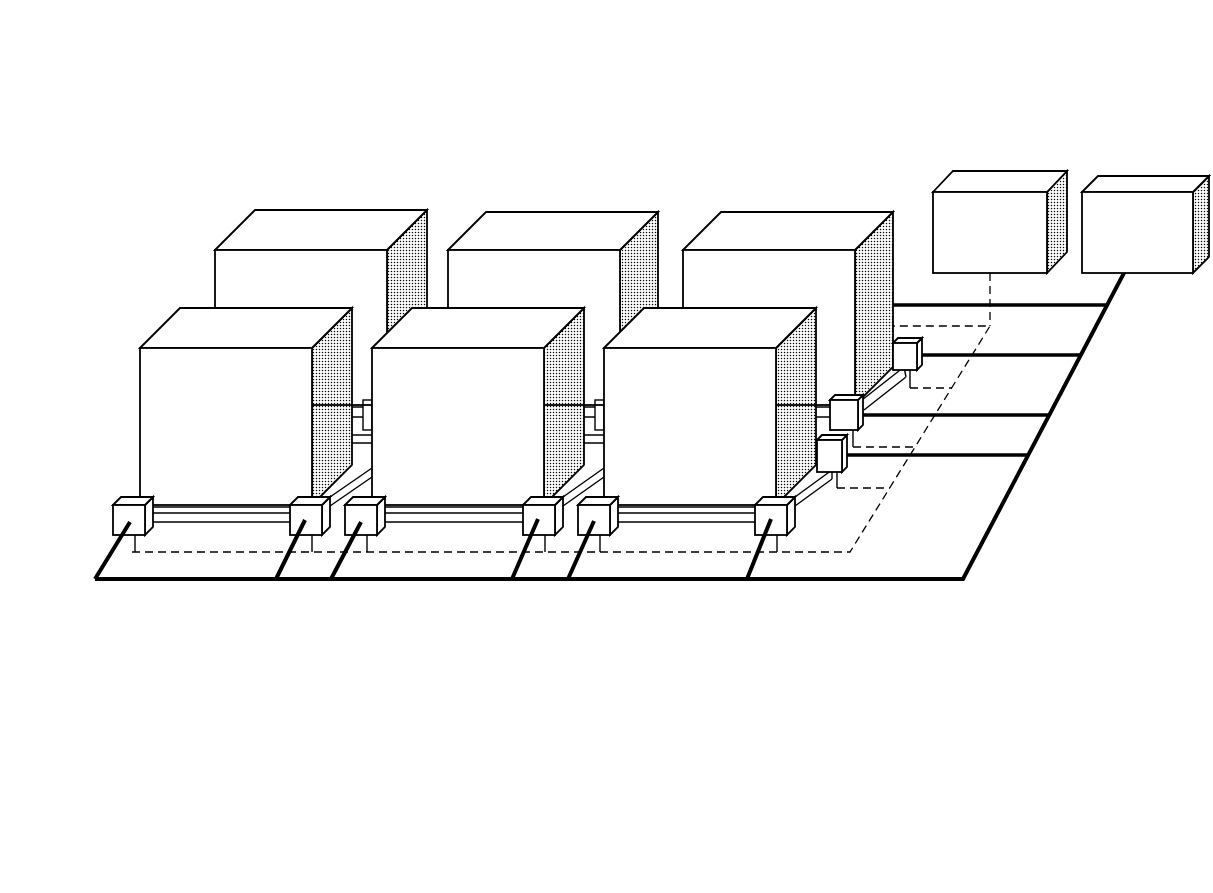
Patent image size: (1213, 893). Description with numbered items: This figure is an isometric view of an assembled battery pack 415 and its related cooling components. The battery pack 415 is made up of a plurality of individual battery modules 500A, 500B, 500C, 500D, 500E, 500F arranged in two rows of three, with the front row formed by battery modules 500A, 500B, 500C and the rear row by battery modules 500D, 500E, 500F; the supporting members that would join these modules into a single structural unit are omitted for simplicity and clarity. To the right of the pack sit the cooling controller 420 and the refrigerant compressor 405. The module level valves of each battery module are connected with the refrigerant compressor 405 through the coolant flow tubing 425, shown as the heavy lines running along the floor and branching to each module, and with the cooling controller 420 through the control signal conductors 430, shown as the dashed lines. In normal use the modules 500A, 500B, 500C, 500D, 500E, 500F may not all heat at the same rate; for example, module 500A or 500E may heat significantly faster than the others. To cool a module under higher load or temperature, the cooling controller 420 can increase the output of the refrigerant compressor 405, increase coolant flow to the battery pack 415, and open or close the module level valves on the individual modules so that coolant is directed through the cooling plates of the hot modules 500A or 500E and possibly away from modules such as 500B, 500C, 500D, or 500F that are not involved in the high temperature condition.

The battery pack 415 is at (735, 114).
The battery module 500A is at (203, 397).
The battery module 500B is at (435, 397).
The battery module 500C is at (667, 397).
The battery module 500D is at (278, 285).
The battery module 500E is at (511, 285).
The battery module 500F is at (746, 285).
The cooling controller 420 is at (973, 219).
The refrigerant compressor 405 is at (1120, 219).
The coolant flow tubing 425 is at (1005, 500).
The control signal conductors 430 is at (876, 502).